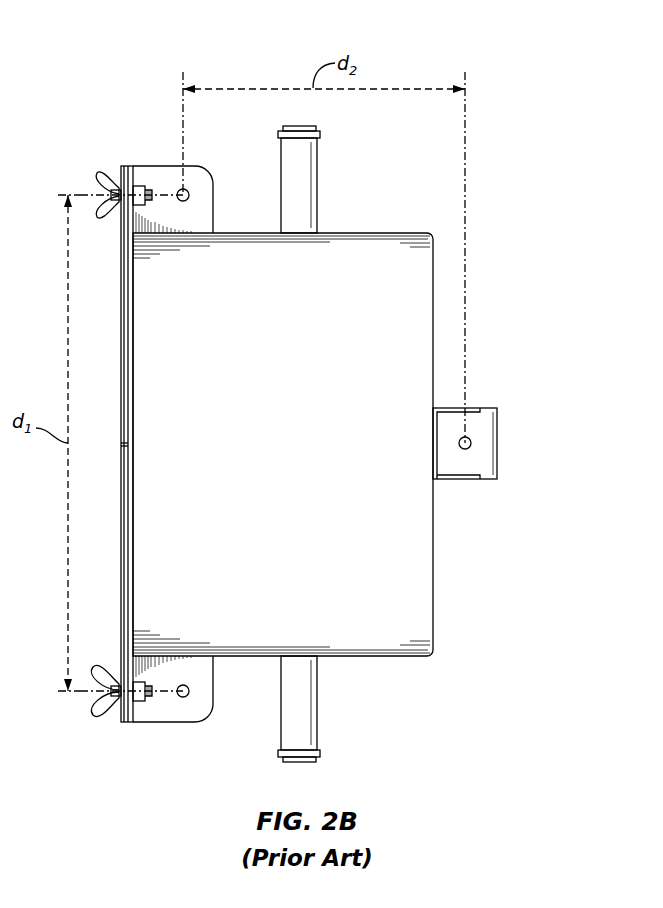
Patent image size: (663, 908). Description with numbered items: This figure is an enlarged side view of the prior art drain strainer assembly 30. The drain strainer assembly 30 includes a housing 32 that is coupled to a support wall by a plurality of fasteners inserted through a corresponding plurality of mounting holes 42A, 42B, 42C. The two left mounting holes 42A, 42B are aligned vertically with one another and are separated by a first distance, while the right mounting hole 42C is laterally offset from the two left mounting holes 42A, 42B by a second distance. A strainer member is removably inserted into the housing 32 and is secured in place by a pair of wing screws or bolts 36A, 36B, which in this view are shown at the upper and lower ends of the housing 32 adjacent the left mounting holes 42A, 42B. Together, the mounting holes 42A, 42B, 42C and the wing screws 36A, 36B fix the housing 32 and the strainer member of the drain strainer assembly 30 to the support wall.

The drain strainer assembly 30 is at (127, 52).
The housing 32 is at (422, 584).
The wing screw/bolt 36A is at (101, 172).
The wing screw/bolt 36B is at (93, 736).
The left mounting hole 42A is at (187, 195).
The left mounting hole 42B is at (189, 691).
The right mounting hole 42C is at (471, 441).